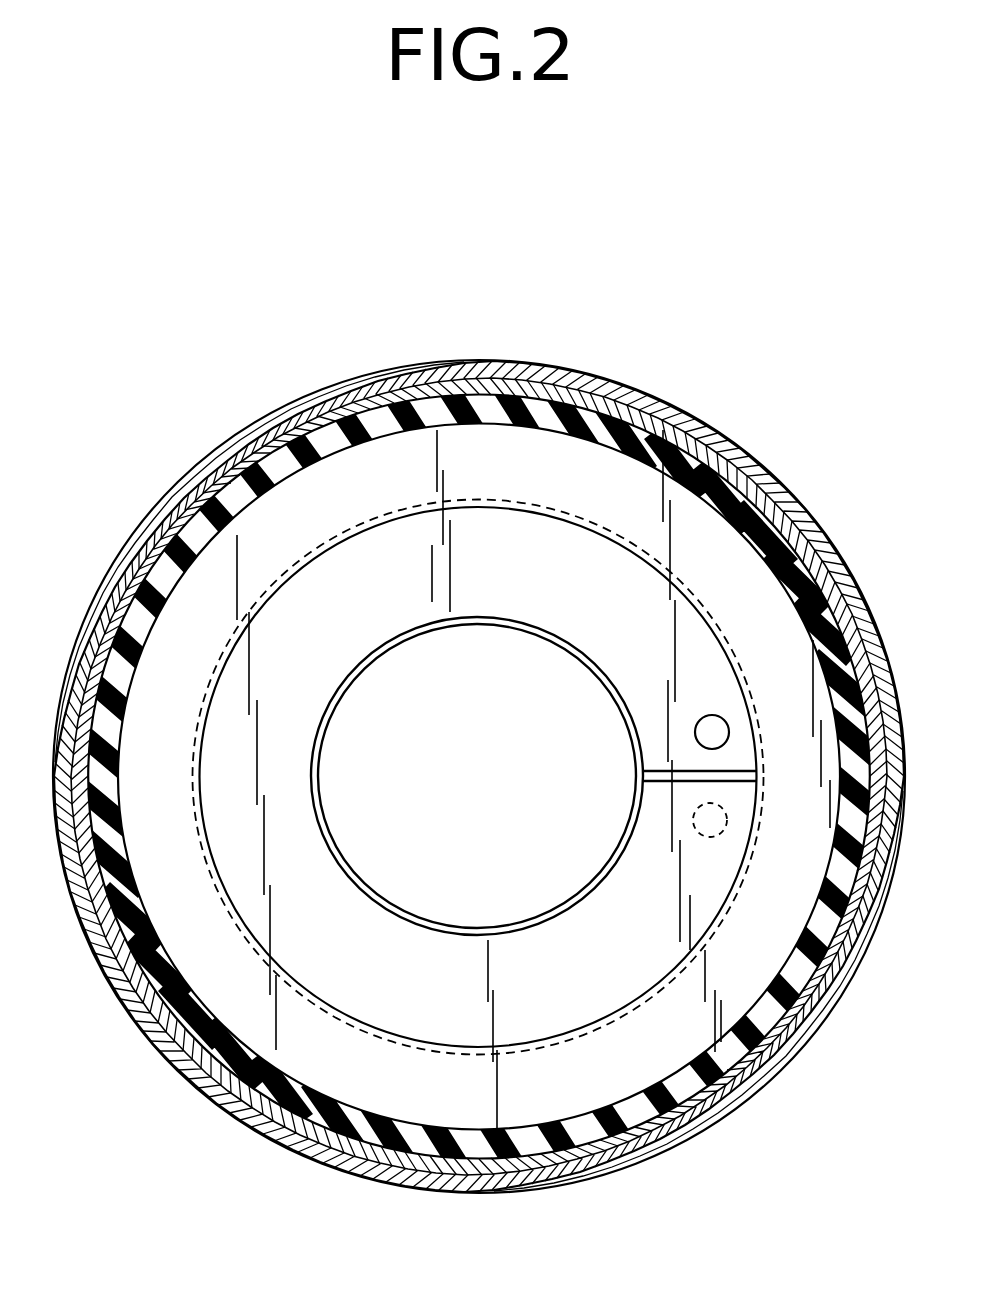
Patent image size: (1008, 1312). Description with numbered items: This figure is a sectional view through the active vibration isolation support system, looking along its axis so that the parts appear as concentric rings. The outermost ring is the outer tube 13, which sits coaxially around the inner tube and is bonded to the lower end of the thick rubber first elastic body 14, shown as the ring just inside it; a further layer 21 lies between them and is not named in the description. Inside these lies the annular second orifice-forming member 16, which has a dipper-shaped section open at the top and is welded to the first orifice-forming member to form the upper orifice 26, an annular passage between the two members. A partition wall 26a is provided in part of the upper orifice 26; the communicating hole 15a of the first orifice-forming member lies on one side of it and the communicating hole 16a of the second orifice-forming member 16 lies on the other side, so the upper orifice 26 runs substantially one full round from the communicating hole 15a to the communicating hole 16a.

The outer tube 13 is at (727, 437).
The heat insulating layer 21 is at (264, 442).
The first elastic body 14 is at (490, 405).
The upper orifice 26 is at (530, 576).
The second orifice-forming member 16 is at (399, 641).
The partition wall 26a is at (667, 776).
The communicating hole 16a is at (696, 722).
The communicating hole 15a is at (698, 830).